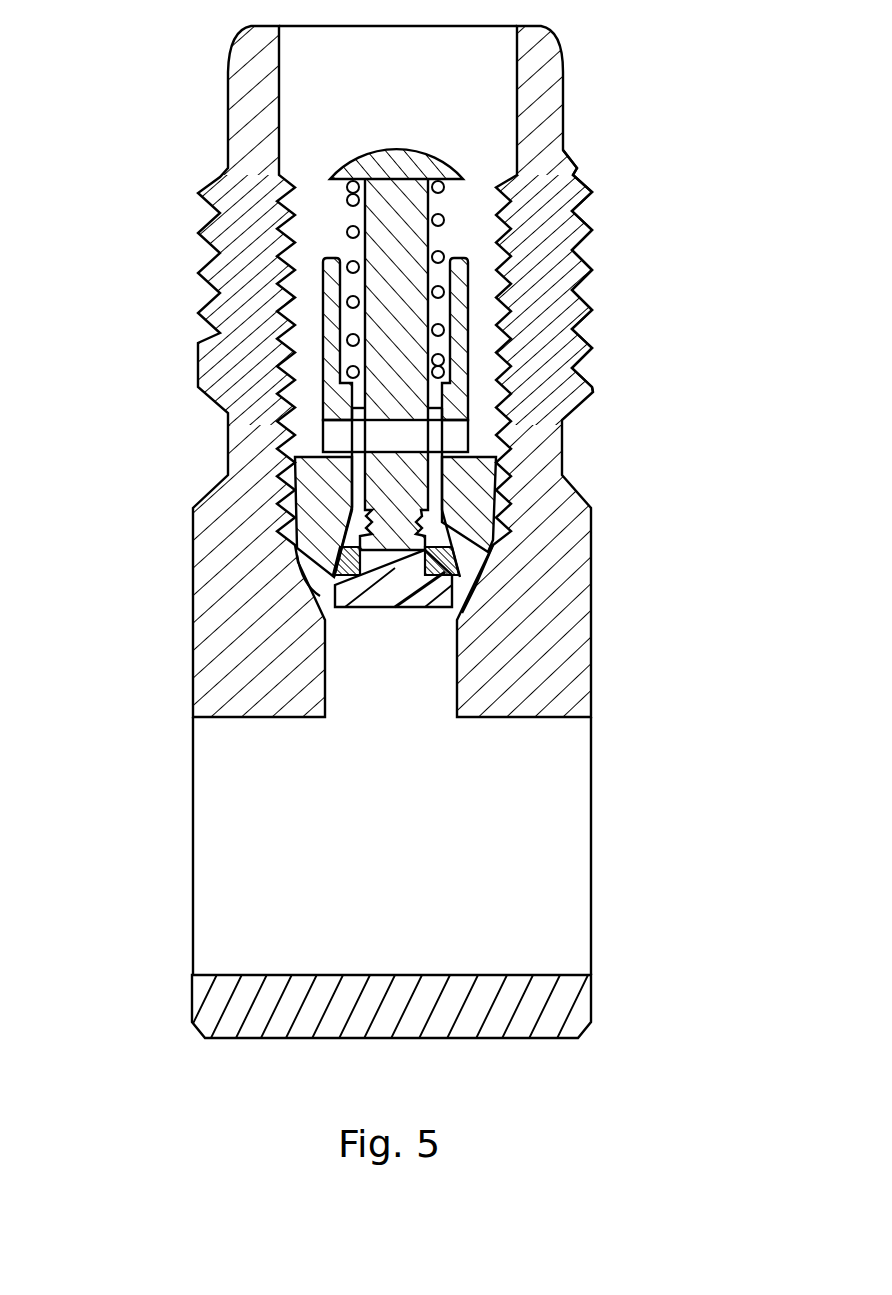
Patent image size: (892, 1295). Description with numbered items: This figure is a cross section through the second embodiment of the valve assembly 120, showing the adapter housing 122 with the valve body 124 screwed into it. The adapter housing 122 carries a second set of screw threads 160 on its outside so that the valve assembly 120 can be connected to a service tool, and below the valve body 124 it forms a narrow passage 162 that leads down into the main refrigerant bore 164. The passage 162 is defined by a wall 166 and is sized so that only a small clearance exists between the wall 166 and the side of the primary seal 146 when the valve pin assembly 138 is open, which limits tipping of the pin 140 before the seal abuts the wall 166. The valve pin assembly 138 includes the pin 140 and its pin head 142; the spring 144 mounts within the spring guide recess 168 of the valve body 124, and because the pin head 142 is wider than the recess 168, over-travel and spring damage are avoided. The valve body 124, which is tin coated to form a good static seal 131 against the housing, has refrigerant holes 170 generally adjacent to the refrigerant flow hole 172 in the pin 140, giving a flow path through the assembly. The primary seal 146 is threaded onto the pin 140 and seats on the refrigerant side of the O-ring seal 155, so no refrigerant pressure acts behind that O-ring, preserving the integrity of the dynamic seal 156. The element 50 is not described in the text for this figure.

The seal 50 is at (327, 592).
The valve assembly 120 is at (578, 75).
The adapter housing 122 is at (562, 457).
The valve body 124 is at (470, 343).
The static seal 131 is at (495, 573).
The valve pin assembly 138 is at (323, 225).
The pin 140 is at (428, 242).
The pin head 142 is at (350, 162).
The spring 144 is at (441, 221).
The primary seal 146 is at (450, 600).
The O-ring seal 155 is at (357, 563).
The dynamic seal 156 is at (467, 558).
The second set of screw threads 160 is at (577, 167).
The narrow passage 162 is at (457, 673).
The main refrigerant bore 164 is at (446, 975).
The wall 166 is at (325, 680).
The spring guide recess 168 is at (347, 280).
The refrigerant holes 170 is at (505, 442).
The refrigerant flow hole 172 is at (380, 420).